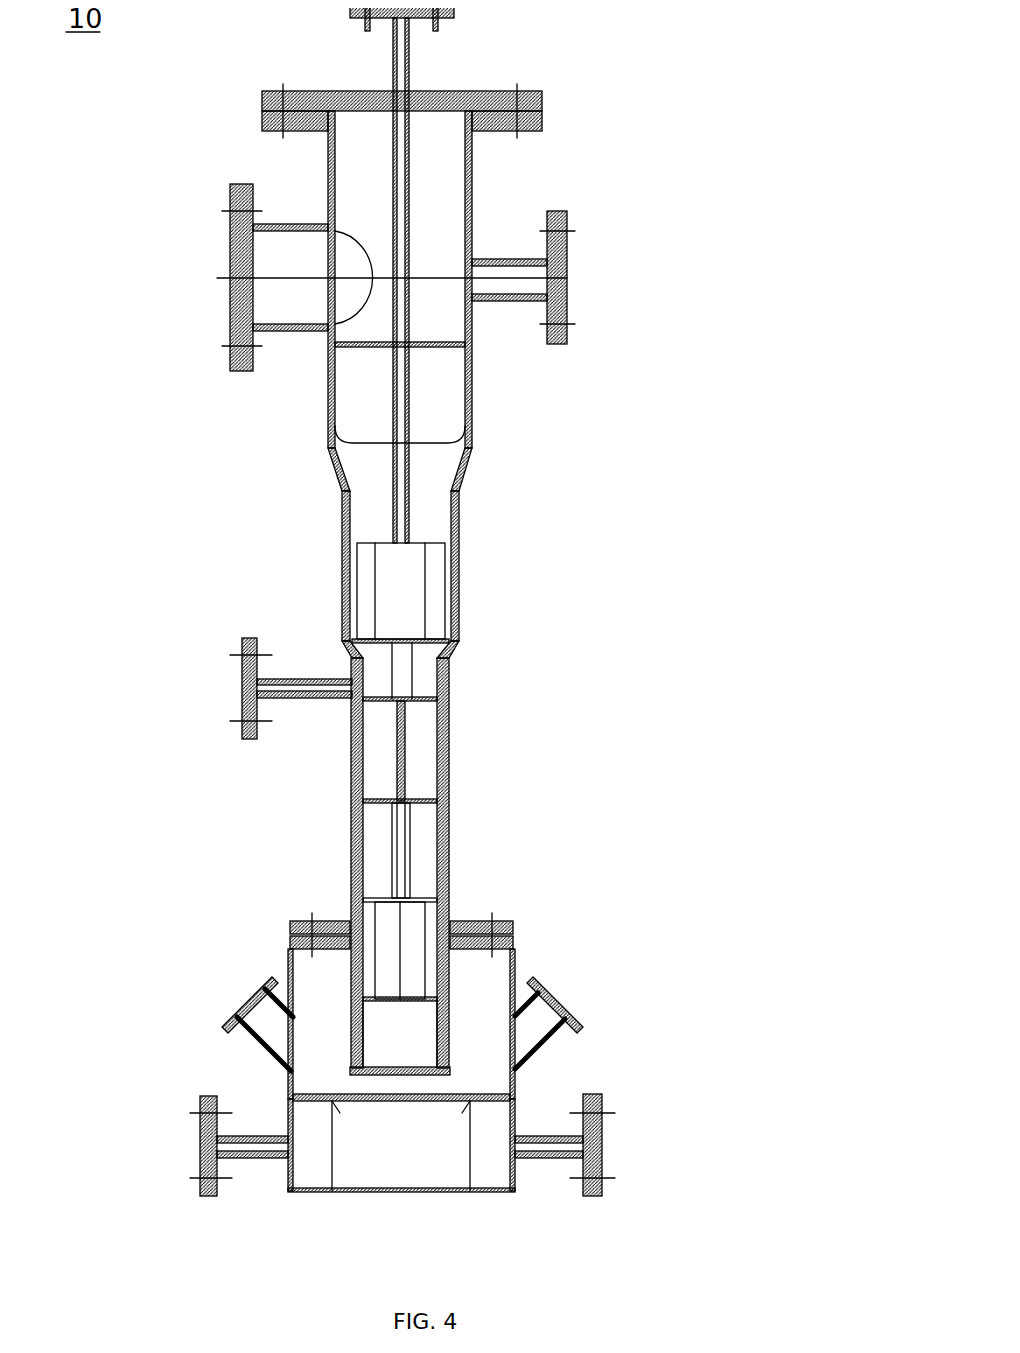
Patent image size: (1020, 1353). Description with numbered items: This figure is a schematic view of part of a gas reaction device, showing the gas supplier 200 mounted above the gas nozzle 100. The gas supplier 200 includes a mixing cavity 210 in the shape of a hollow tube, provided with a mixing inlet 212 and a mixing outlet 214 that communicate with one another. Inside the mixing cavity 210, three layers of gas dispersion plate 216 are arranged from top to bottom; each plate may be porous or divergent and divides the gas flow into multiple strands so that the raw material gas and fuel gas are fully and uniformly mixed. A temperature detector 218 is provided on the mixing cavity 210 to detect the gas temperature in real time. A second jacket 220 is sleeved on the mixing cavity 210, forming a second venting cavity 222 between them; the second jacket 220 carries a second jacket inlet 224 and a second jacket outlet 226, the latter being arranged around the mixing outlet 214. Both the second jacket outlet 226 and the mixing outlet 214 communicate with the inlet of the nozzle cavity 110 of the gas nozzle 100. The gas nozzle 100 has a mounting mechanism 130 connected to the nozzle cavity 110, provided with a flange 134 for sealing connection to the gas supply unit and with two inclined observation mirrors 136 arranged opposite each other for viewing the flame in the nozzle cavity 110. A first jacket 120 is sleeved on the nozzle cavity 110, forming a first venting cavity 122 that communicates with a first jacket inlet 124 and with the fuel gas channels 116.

The gas nozzle 100 is at (672, 1003).
The nozzle cavity 110 is at (392, 1152).
The fuel gas channels 116 is at (505, 1093).
The first jacket 120 is at (508, 1177).
The first venting cavity 122 is at (313, 1163).
The first jacket inlet 124 is at (205, 1160).
The mounting mechanism 130 is at (323, 993).
The flange 134 is at (300, 925).
The observation mirror 136 is at (280, 1020).
The gas supplier 200 is at (618, 165).
The mixing cavity 210 is at (375, 497).
The mixing inlet 212 is at (270, 293).
The mixing outlet 214 is at (405, 1068).
The gas dispersion plate 216 is at (440, 405).
The temperature detector 218 is at (397, 2).
The second jacket 220 is at (350, 800).
The second venting cavity 222 is at (350, 853).
The second jacket inlet 224 is at (245, 683).
The second jacket outlet 226 is at (365, 1072).